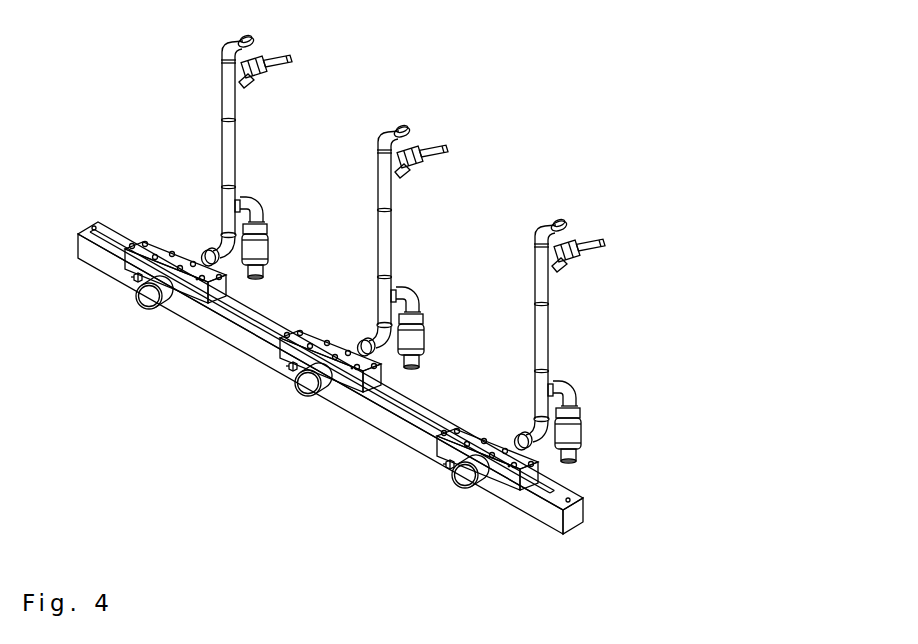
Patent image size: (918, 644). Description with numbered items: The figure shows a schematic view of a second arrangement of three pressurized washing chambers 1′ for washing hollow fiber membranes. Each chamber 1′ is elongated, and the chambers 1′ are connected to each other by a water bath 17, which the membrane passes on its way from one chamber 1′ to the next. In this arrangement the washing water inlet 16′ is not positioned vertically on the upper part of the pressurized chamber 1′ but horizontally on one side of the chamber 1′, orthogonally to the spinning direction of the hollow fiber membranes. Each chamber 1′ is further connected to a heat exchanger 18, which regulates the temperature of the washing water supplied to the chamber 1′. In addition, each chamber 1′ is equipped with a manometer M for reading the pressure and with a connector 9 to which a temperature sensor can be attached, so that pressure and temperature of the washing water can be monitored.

The pressurized washing chamber 1′ is at (192, 310).
The connector for a temperature sensor 9 is at (130, 280).
The manometer M is at (137, 310).
The washing water inlet 16′ is at (204, 244).
The water bath 17 is at (268, 305).
The heat exchanger 18 is at (560, 203).